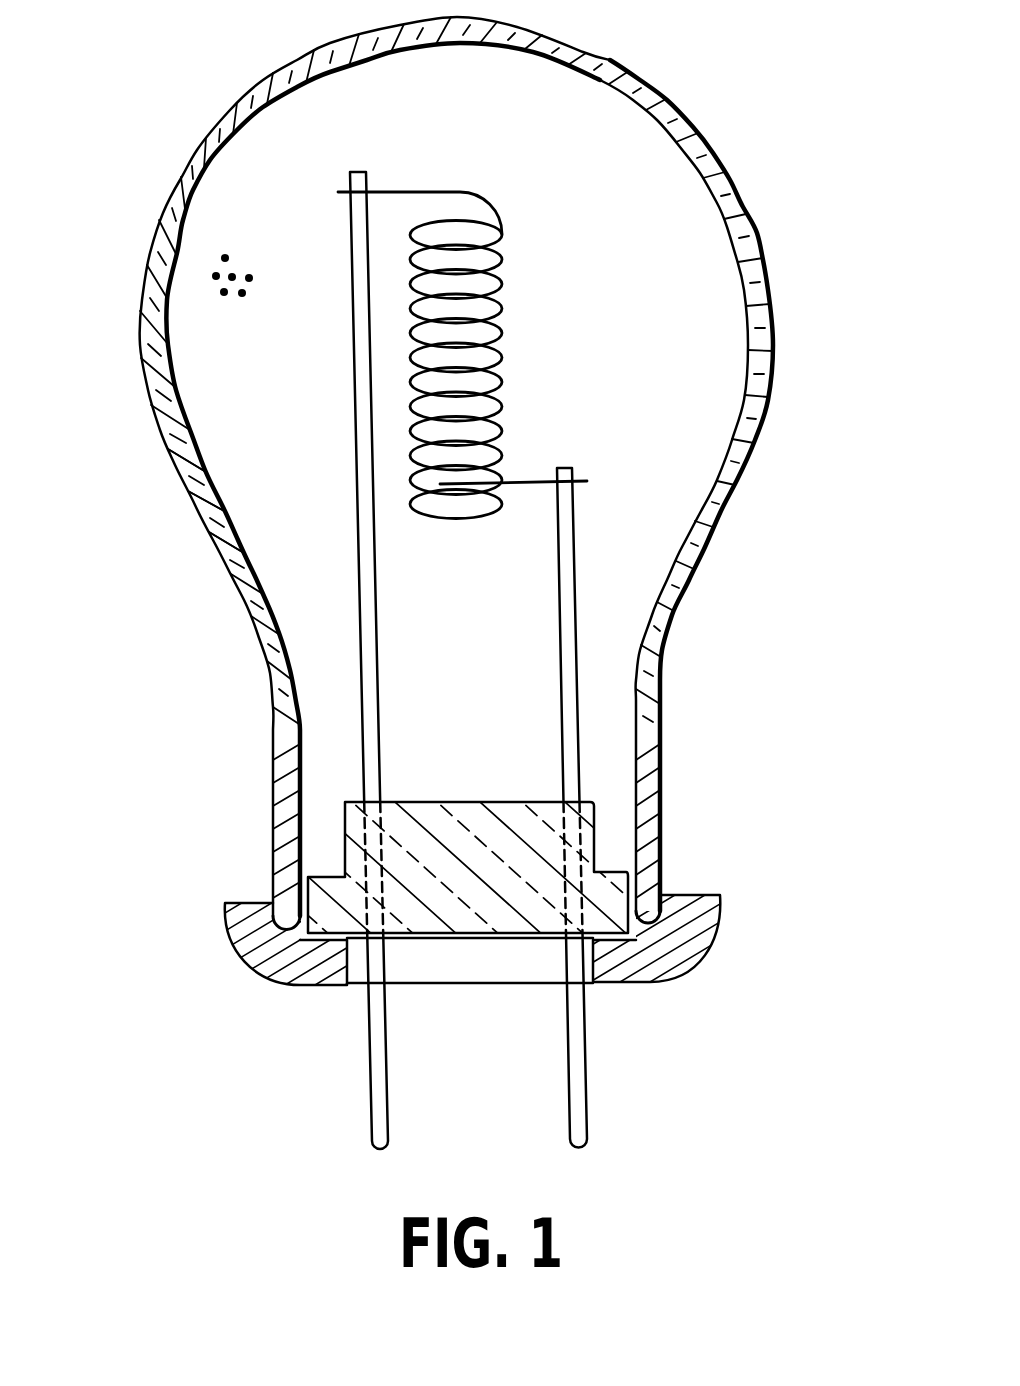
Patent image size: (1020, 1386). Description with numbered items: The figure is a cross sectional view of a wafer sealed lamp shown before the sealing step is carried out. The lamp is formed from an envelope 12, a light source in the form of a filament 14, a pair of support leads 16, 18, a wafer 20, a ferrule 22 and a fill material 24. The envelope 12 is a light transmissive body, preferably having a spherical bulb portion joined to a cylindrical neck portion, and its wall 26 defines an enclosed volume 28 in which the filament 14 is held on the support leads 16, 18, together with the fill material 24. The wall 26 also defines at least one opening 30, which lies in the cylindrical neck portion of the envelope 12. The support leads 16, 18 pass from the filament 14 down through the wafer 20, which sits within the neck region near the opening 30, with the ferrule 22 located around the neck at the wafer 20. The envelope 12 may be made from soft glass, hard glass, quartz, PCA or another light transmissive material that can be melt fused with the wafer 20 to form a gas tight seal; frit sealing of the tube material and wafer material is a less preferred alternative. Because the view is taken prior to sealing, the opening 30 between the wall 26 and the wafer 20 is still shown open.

The envelope 12 is at (200, 540).
The filament 14 is at (503, 357).
The support lead 16 is at (378, 606).
The support lead 18 is at (557, 707).
The wafer 20 is at (460, 800).
The ferrule 22 is at (260, 973).
The fill material 24 is at (245, 264).
The wall 26 is at (205, 477).
The enclosed volume 28 is at (606, 220).
The opening 30 is at (312, 815).